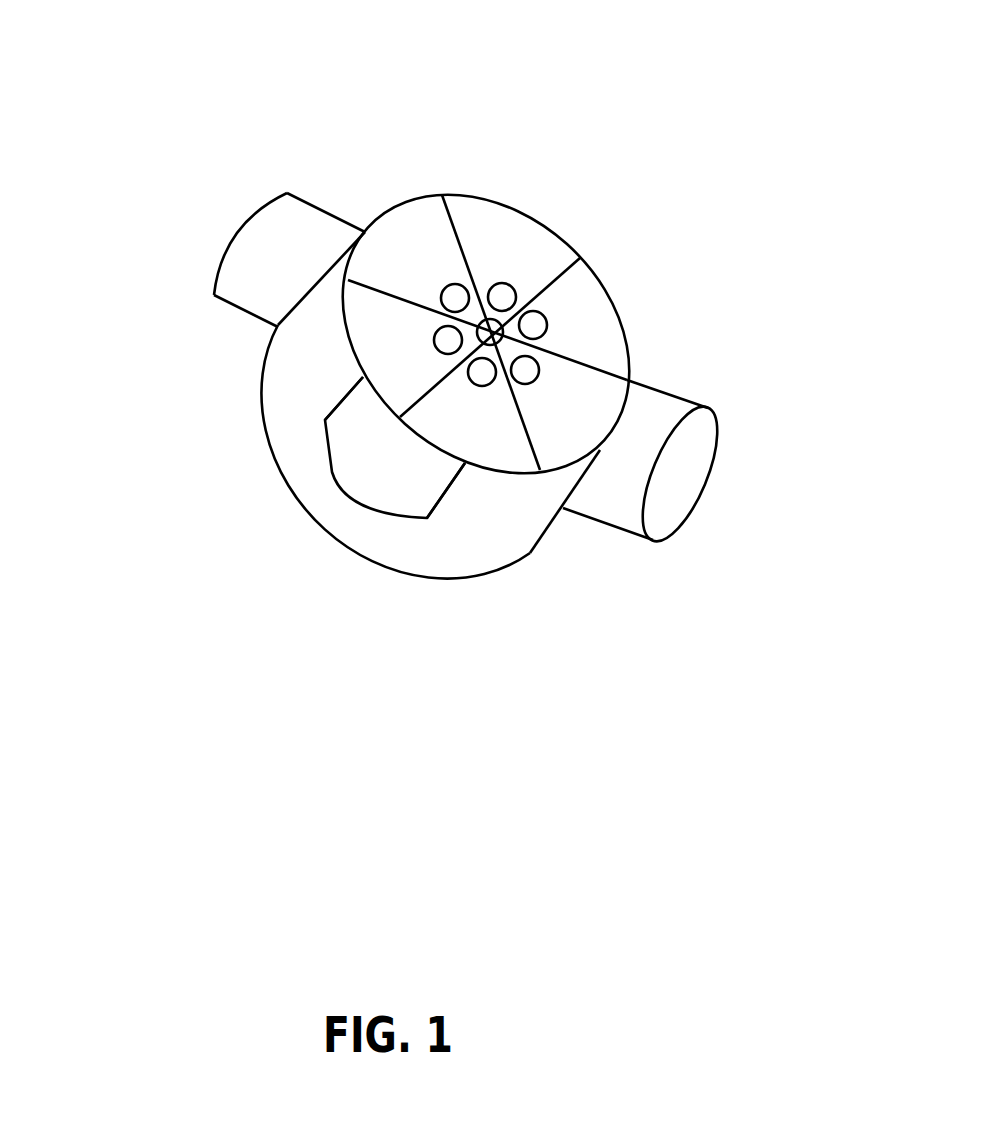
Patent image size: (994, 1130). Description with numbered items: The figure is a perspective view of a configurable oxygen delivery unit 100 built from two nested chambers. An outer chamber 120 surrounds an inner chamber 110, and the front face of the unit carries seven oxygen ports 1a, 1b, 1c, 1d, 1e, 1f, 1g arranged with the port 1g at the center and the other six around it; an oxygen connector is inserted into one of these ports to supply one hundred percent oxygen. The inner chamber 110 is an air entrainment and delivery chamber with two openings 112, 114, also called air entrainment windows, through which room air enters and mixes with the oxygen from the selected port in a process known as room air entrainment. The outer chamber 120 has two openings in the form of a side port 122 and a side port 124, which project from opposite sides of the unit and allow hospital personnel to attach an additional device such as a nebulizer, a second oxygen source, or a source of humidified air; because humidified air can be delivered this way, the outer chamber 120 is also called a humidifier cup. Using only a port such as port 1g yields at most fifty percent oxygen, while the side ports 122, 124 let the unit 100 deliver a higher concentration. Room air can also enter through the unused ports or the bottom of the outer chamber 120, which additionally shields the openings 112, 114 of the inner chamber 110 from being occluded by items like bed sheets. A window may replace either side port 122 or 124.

The configurable oxygen delivery unit 100 is at (432, 337).
The inner chamber 110 is at (332, 470).
The opening 112 is at (447, 498).
The opening 114 is at (333, 393).
The outer chamber 120 is at (383, 567).
The side port 122 is at (662, 383).
The side port 124 is at (242, 230).
The oxygen port 1a is at (548, 326).
The oxygen port 1b is at (538, 385).
The oxygen port 1c is at (478, 388).
The oxygen port 1d is at (434, 340).
The oxygen port 1e is at (446, 289).
The oxygen port 1f is at (505, 284).
The oxygen port 1g is at (491, 332).